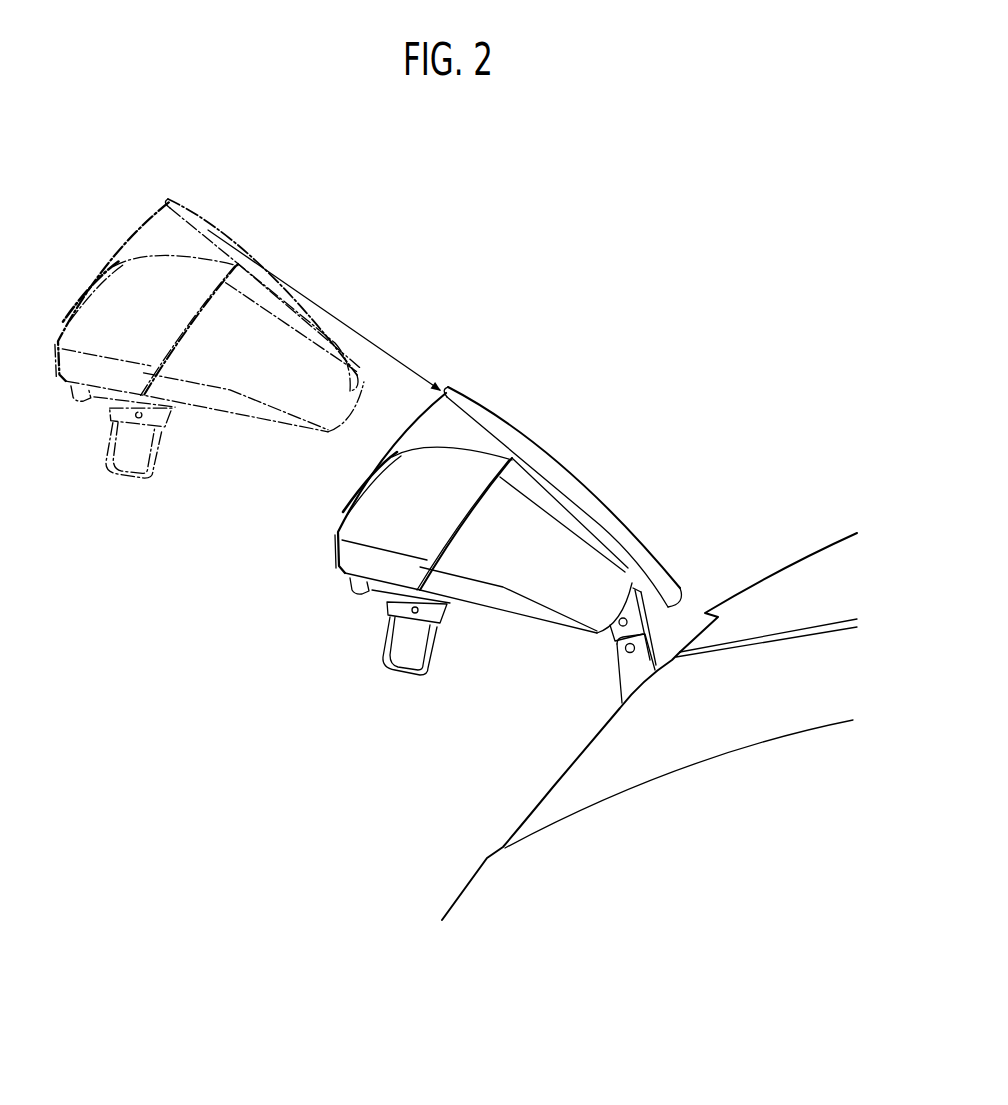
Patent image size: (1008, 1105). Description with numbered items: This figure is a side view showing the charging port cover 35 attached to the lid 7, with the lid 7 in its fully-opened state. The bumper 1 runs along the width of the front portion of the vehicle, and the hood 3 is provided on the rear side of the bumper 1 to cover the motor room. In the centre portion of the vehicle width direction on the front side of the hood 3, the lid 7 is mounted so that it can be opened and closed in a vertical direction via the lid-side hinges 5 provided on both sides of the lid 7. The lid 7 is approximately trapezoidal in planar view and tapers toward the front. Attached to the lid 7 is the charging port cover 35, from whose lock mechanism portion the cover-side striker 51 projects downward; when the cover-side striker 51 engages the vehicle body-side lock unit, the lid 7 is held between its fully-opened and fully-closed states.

The bumper 1 is at (660, 760).
The hood 3 is at (807, 553).
The lid-side hinges 5 is at (630, 672).
The lid 7 is at (589, 493).
The charging port cover 35 is at (347, 515).
The cover-side striker 51 is at (388, 672).